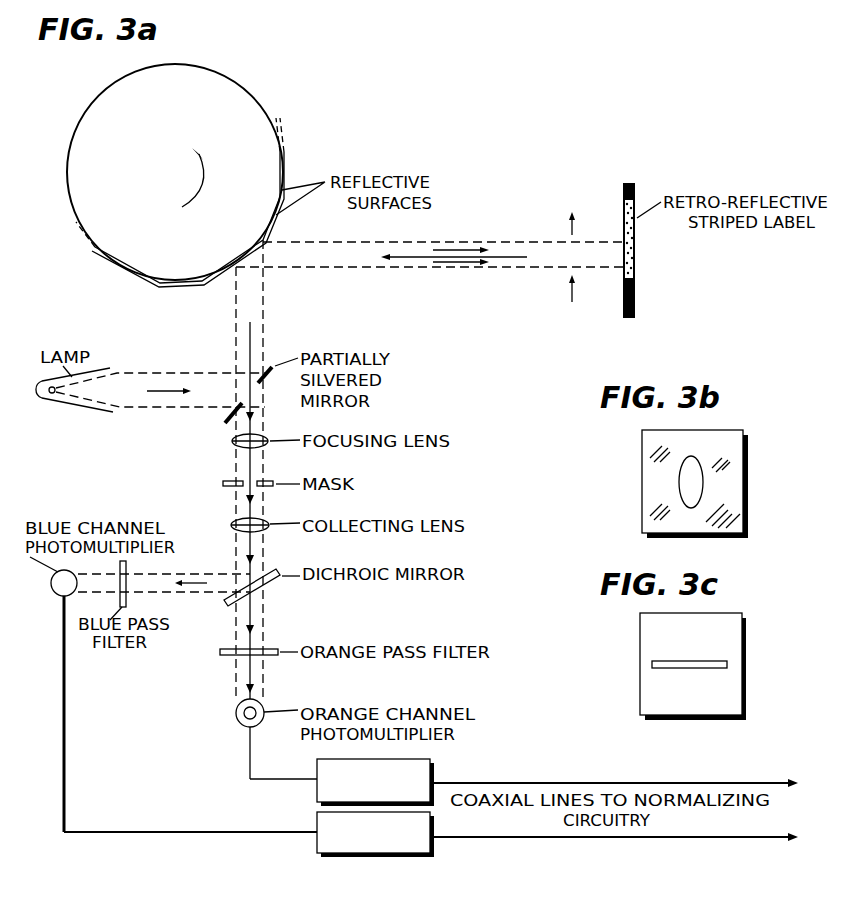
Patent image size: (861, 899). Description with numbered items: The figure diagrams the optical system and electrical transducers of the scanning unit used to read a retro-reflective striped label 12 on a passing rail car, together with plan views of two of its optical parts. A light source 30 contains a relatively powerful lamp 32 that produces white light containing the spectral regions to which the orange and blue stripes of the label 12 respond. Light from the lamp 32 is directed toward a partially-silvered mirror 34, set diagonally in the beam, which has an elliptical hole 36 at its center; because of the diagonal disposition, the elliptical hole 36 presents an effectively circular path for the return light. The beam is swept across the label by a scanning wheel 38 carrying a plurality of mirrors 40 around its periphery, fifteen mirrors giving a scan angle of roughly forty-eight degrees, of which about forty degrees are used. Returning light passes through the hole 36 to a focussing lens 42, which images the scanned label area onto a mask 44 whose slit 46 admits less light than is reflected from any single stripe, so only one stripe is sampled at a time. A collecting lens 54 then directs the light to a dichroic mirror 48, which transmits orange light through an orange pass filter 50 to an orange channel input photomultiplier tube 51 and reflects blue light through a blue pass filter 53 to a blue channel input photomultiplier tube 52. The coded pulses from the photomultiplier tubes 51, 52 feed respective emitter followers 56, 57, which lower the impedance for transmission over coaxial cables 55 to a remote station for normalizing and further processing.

In FIG. 3a, the label 12 is at (625, 312).
In FIG. 3a, the light source 30 is at (82, 420).
In FIG. 3a, the lamp 32 is at (56, 389).
In FIG. 3a, the partially-silvered mirror 34 is at (227, 418).
In FIG. 3b, the partially-silvered mirror 34 is at (733, 435).
In FIG. 3a, the elliptical hole 36 is at (250, 388).
In FIG. 3b, the elliptical hole 36 is at (697, 497).
In FIG. 3a, the scanning wheel 38 is at (247, 106).
In FIG. 3a, the mirrors 40 is at (140, 283).
In FIG. 3a, the focussing lens 42 is at (236, 443).
In FIG. 3a, the mask 44 is at (224, 486).
In FIG. 3c, the mask 44 is at (735, 622).
In FIG. 3a, the slit 46 is at (257, 487).
In FIG. 3c, the slit 46 is at (703, 668).
In FIG. 3a, the dichroic mirror 48 is at (227, 605).
In FIG. 3a, the orange pass filter 50 is at (220, 652).
In FIG. 3a, the orange channel input photomultiplier tube 51 is at (240, 720).
In FIG. 3a, the blue channel input photomultiplier tube 52 is at (56, 593).
In FIG. 3a, the blue pass filter 53 is at (121, 597).
In FIG. 3a, the collecting lens 54 is at (231, 526).
In FIG. 3a, the coaxial cables 55 is at (557, 782).
In FIG. 3a, the emitter follower 56 is at (317, 785).
In FIG. 3a, the emitter follower 57 is at (320, 816).